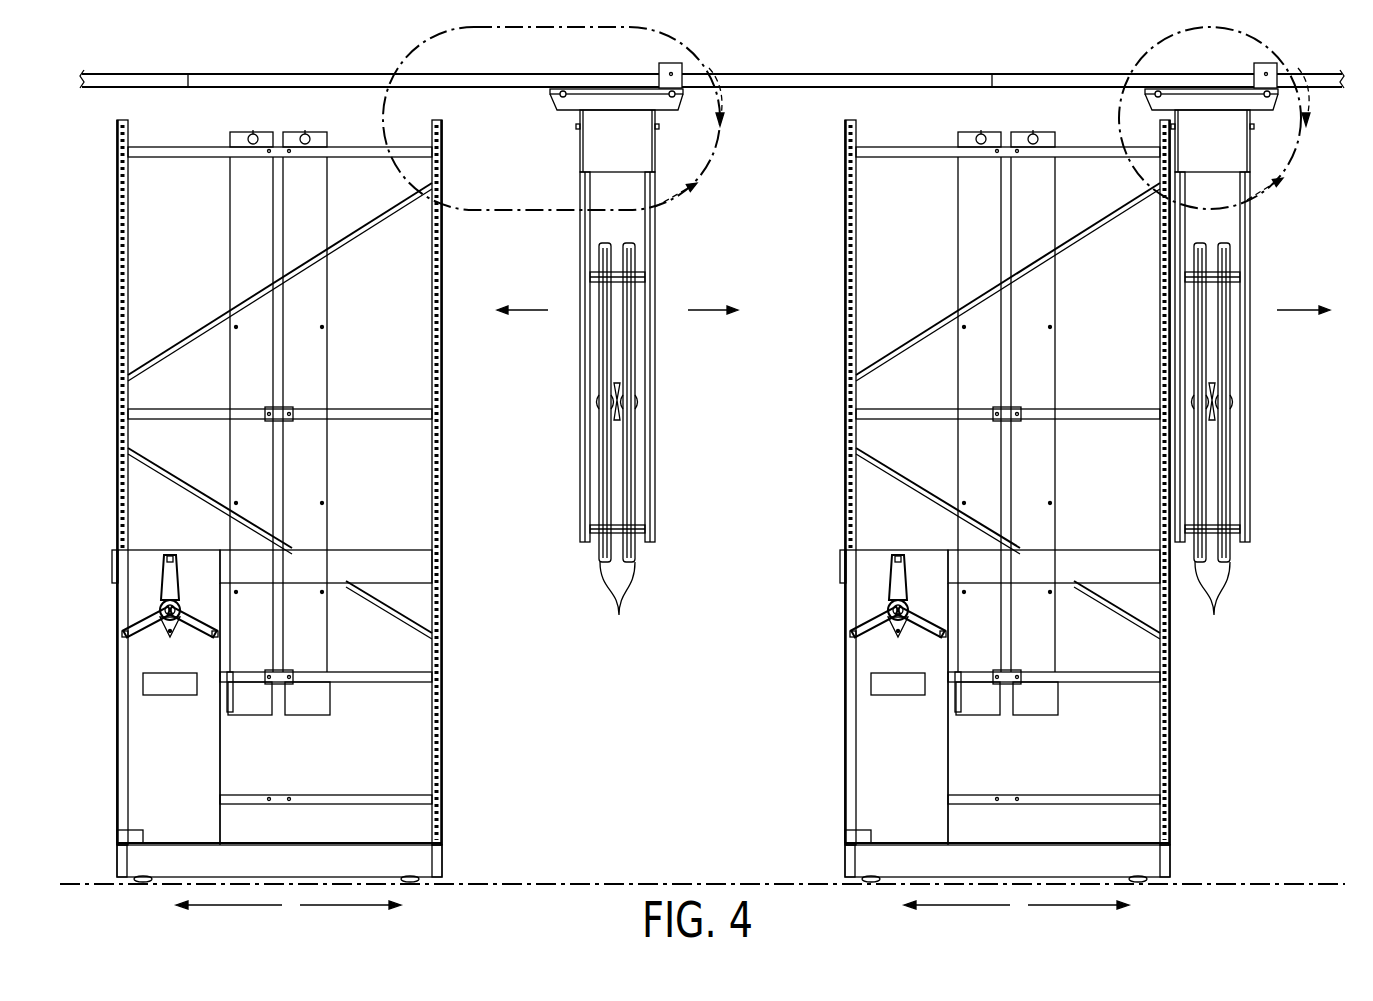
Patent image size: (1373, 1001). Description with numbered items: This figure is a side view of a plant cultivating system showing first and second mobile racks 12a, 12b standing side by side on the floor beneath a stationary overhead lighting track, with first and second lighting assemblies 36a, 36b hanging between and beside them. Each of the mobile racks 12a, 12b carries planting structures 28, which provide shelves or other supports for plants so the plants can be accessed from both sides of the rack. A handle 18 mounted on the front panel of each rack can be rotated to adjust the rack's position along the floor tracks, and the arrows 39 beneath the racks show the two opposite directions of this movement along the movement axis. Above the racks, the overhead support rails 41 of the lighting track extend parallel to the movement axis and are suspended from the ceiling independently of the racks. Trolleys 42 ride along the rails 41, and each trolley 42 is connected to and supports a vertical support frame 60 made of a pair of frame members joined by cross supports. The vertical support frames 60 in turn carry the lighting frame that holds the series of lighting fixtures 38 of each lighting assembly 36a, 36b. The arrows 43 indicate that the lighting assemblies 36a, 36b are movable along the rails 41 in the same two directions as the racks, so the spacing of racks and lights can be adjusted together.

The first mobile rack 12a is at (443, 712).
The second mobile rack 12b is at (1171, 712).
The handle 18 is at (140, 624).
The planting structures 28 is at (238, 373).
The first lighting assembly 36a is at (655, 400).
The second lighting assembly 36b is at (1250, 400).
The lighting fixtures 38 is at (915, 604).
The arrows 39 is at (340, 906).
The support rails 41 is at (305, 73).
The trolleys 42 is at (597, 142).
The arrows 43 is at (527, 310).
The vertical support frame 60 is at (668, 297).